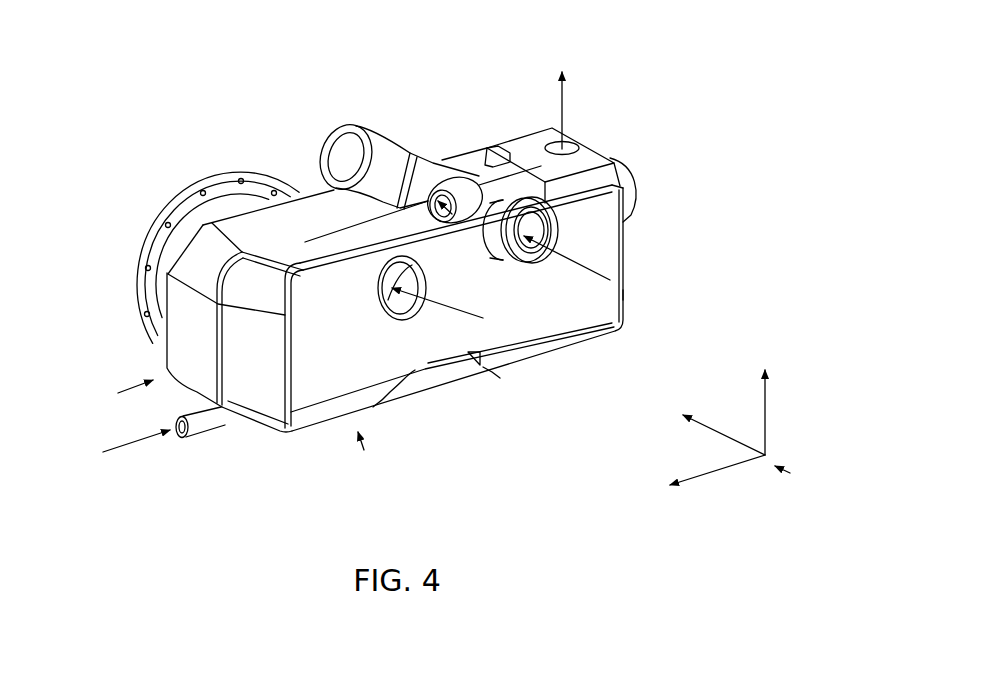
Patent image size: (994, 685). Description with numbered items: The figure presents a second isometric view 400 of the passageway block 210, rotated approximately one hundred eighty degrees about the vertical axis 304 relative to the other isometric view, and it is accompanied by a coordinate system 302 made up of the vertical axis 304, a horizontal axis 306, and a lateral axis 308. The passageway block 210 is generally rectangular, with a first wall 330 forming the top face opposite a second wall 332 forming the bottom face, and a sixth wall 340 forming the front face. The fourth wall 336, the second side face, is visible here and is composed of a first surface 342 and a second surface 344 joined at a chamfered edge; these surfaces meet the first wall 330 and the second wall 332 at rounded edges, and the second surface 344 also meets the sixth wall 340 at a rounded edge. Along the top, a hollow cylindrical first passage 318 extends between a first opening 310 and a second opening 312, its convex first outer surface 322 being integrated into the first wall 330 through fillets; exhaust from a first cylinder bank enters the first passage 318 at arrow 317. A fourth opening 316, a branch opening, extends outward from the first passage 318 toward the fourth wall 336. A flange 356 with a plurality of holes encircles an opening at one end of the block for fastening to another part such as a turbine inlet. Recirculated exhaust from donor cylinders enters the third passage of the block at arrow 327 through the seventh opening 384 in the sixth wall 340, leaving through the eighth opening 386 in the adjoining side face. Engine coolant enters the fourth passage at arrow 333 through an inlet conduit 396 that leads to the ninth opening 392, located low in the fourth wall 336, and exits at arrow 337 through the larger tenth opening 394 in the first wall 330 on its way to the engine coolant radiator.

The second isometric view 400 is at (647, 51).
The passageway block 210 is at (752, 190).
The second opening 312 is at (367, 106).
The first outer surface 322 is at (395, 150).
The fourth opening 316 is at (432, 187).
The arrow 337 is at (560, 108).
The tenth opening 394 is at (566, 140).
The eighth opening 386 is at (634, 170).
The first wall 330 is at (313, 210).
The flange 356 is at (183, 197).
The first passage 318 is at (557, 238).
The arrow 317 is at (593, 297).
The first surface 342 is at (180, 330).
The first opening 310 is at (501, 283).
The sixth wall 340 is at (547, 313).
The fourth wall 336 is at (118, 393).
The seventh opening 384 is at (400, 303).
The arrow 327 is at (462, 345).
The vertical axis 304 is at (768, 410).
The lateral axis 308 is at (738, 438).
The ninth opening 392 is at (180, 435).
The horizontal axis 306 is at (708, 467).
The coordinate system 302 is at (790, 473).
The arrow 333 is at (103, 452).
The inlet conduit 396 is at (212, 423).
The second surface 344 is at (257, 367).
The second wall 332 is at (364, 450).